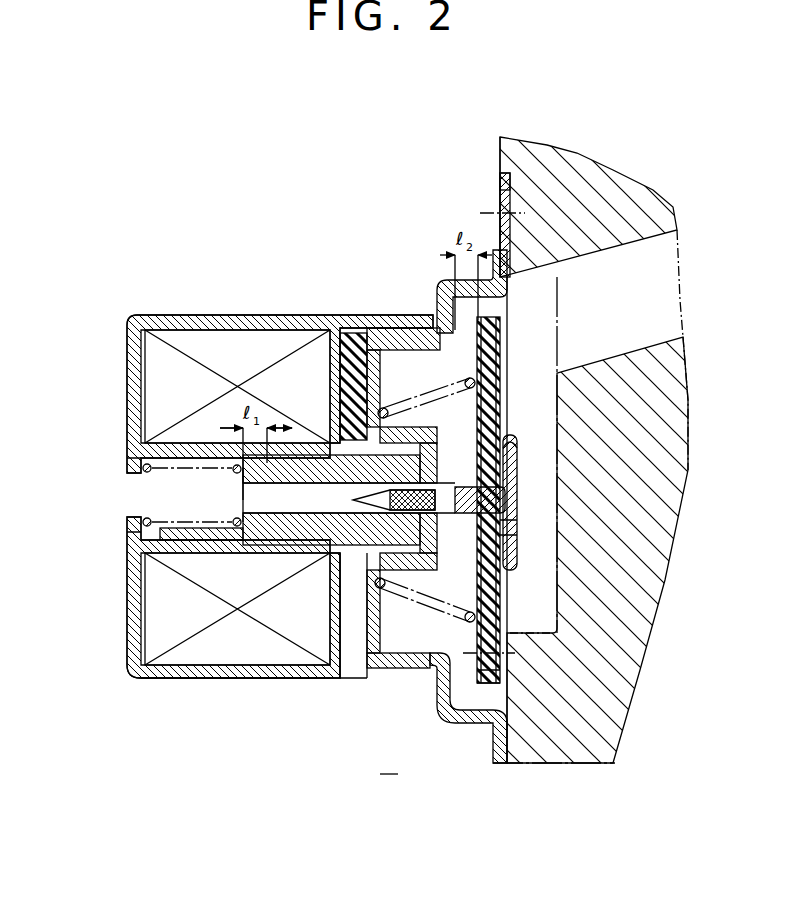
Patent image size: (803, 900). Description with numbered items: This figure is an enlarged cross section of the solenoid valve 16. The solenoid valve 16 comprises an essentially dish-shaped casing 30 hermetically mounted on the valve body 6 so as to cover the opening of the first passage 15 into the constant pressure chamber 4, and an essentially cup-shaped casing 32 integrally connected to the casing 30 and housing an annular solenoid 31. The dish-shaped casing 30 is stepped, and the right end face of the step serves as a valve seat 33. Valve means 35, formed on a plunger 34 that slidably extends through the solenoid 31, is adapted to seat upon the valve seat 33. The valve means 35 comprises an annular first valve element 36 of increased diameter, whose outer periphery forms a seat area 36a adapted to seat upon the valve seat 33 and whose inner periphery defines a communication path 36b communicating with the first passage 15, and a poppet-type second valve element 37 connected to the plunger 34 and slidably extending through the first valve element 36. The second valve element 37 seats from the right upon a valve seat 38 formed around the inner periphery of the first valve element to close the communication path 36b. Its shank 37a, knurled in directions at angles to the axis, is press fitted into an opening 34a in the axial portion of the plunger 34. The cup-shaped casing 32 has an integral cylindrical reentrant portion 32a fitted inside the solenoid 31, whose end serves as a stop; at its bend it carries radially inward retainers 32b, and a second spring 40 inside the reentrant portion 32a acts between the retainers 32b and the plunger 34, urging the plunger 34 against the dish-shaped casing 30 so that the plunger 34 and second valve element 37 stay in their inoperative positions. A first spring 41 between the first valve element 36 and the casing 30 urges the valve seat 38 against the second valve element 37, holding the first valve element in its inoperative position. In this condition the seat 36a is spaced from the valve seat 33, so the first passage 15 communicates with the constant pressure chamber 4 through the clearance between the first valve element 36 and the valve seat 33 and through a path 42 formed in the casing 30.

The constant pressure chamber 4 is at (389, 762).
The valve body 6 is at (500, 149).
The first passage 15 is at (636, 240).
The solenoid valve 16 is at (224, 684).
The dish-shaped casing 30 is at (470, 724).
The annular solenoid 31 is at (160, 632).
The cup-shaped casing 32 is at (168, 679).
The reentrant portion 32a is at (188, 535).
The retainers 32b is at (127, 518).
The valve seat 33 is at (438, 697).
The plunger 34 is at (300, 535).
The opening 34a is at (336, 495).
The valve means 35 is at (518, 540).
The first valve element 36 is at (502, 388).
The seat area 36a is at (480, 684).
The communication path 36b is at (505, 534).
The second valve element 37 is at (517, 475).
The shank 37a is at (450, 492).
The valve seat 38 is at (506, 448).
The second spring 40 is at (220, 530).
The first spring 41 is at (398, 595).
The path 42 is at (430, 663).